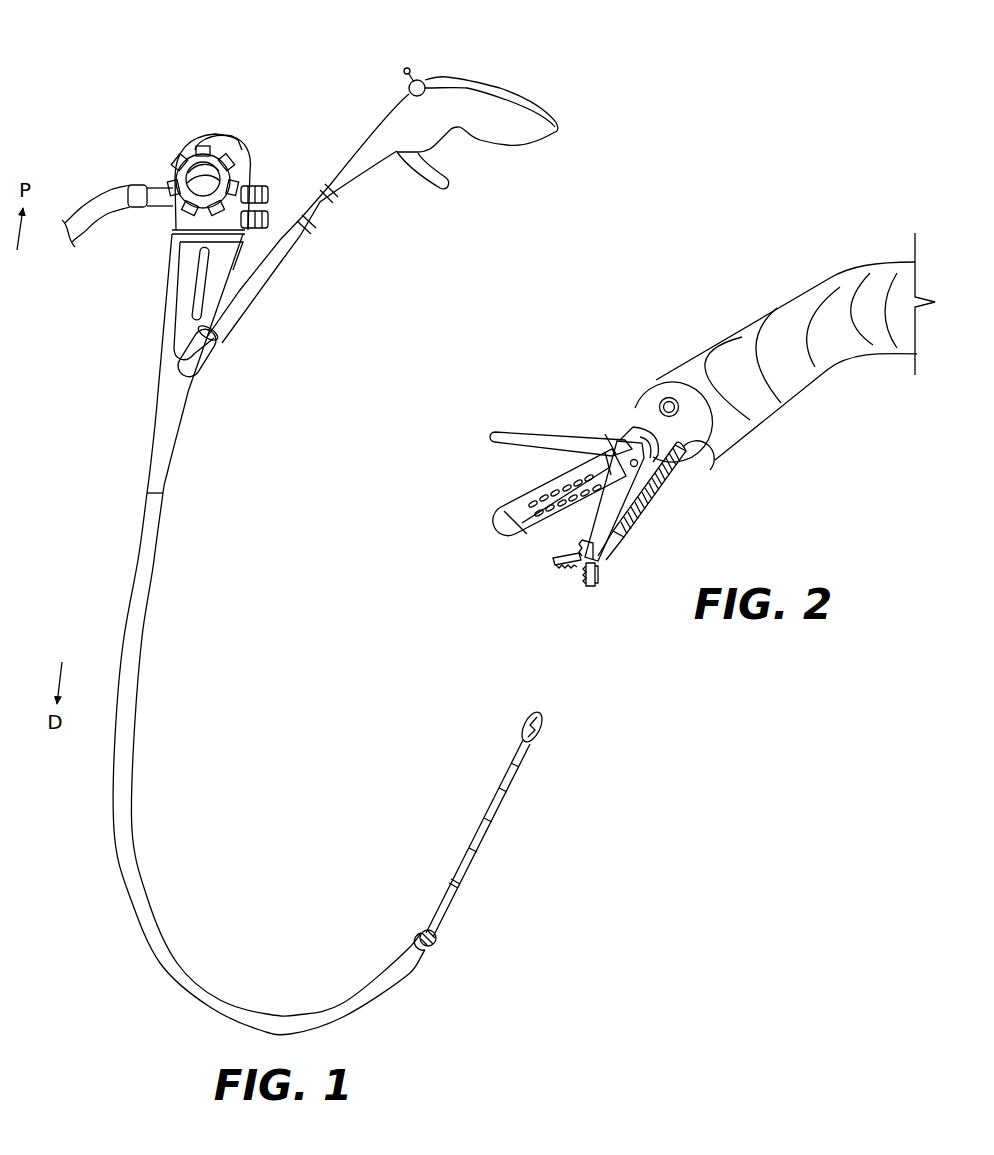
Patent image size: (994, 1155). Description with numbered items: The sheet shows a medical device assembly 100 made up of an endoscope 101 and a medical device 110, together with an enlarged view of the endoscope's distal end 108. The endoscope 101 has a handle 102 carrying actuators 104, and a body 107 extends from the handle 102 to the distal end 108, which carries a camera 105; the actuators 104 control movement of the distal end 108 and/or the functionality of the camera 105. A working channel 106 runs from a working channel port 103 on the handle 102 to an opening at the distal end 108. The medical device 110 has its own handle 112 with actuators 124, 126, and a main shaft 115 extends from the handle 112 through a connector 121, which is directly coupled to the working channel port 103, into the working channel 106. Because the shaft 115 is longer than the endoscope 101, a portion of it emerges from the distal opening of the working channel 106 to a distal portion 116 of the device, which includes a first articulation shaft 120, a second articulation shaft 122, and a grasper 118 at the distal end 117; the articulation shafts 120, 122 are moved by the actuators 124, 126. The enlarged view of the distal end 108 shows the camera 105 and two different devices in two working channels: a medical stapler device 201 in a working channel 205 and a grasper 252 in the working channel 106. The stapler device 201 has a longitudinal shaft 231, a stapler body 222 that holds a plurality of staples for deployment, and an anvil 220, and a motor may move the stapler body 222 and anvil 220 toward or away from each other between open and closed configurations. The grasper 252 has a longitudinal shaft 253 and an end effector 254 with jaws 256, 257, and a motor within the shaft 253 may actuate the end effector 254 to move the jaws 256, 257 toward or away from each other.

In FIG. 1, the medical device assembly 100 is at (293, 456).
In FIG. 1, the endoscope 101 is at (114, 424).
In FIG. 1, the handle 102 is at (174, 286).
In FIG. 1, the working channel port 103 is at (213, 360).
In FIG. 1, the actuators 104 is at (175, 154).
In FIG. 1, the camera 105 is at (437, 938).
In FIG. 2, the camera 105 is at (665, 398).
In FIG. 1, the working channel 106 is at (430, 951).
In FIG. 2, the working channel 106 is at (709, 448).
In FIG. 1, the body 107 is at (140, 832).
In FIG. 2, the body 107 is at (767, 328).
In FIG. 1, the distal end 108 is at (348, 974).
In FIG. 2, the distal end 108 is at (771, 215).
In FIG. 1, the medical device 110 is at (362, 285).
In FIG. 1, the handle 112 is at (486, 100).
In FIG. 1, the main shaft 115 is at (319, 216).
In FIG. 1, the distal portion 116 is at (446, 797).
In FIG. 1, the distal end 117 is at (551, 714).
In FIG. 1, the grasper 118 is at (524, 722).
In FIG. 1, the first articulation shaft 120 is at (473, 861).
In FIG. 1, the connector 121 is at (278, 268).
In FIG. 1, the second articulation shaft 122 is at (507, 793).
In FIG. 1, the actuator 124 is at (431, 178).
In FIG. 1, the actuator 126 is at (420, 66).
In FIG. 2, the medical stapler device 201 is at (531, 403).
In FIG. 2, the working channel 205 is at (637, 432).
In FIG. 2, the anvil 220 is at (575, 432).
In FIG. 2, the stapler body 222 is at (540, 532).
In FIG. 2, the longitudinal shaft 231 is at (627, 428).
In FIG. 2, the grasper 252 is at (641, 531).
In FIG. 2, the longitudinal shaft 253 is at (671, 488).
In FIG. 2, the end effector 254 is at (603, 578).
In FIG. 2, the jaw 256 is at (593, 583).
In FIG. 2, the jaw 257 is at (570, 565).